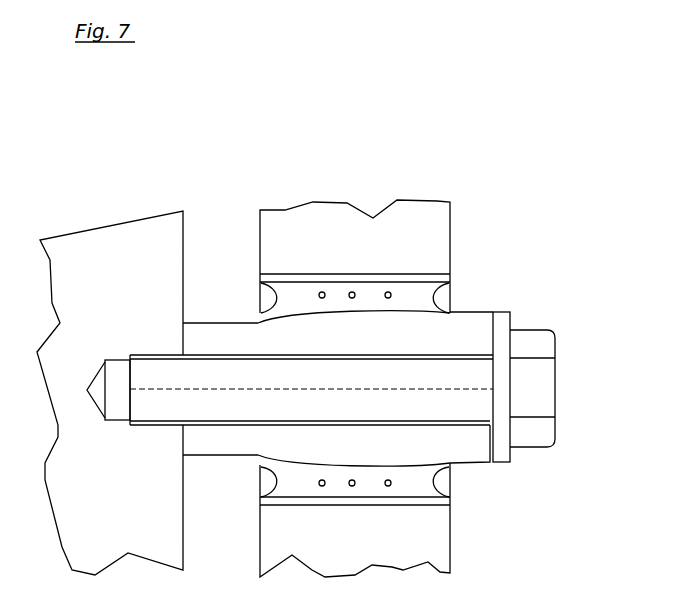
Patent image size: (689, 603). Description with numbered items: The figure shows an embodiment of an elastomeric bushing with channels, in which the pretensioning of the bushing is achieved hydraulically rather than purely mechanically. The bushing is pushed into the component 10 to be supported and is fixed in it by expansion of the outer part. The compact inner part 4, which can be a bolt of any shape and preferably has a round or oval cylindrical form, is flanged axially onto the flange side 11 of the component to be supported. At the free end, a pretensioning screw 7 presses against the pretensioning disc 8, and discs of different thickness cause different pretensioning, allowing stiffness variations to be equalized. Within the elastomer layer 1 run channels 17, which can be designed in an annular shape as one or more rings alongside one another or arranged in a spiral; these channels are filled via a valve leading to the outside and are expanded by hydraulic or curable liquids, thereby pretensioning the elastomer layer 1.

The elastomer layer 1 is at (292, 293).
The compact inner part 4 is at (265, 335).
The pretensioning screw 7 is at (533, 347).
The pretensioning disc 8 is at (502, 450).
The component to be supported 10 is at (432, 235).
The flange side 11 is at (143, 248).
The channels 17 is at (388, 292).